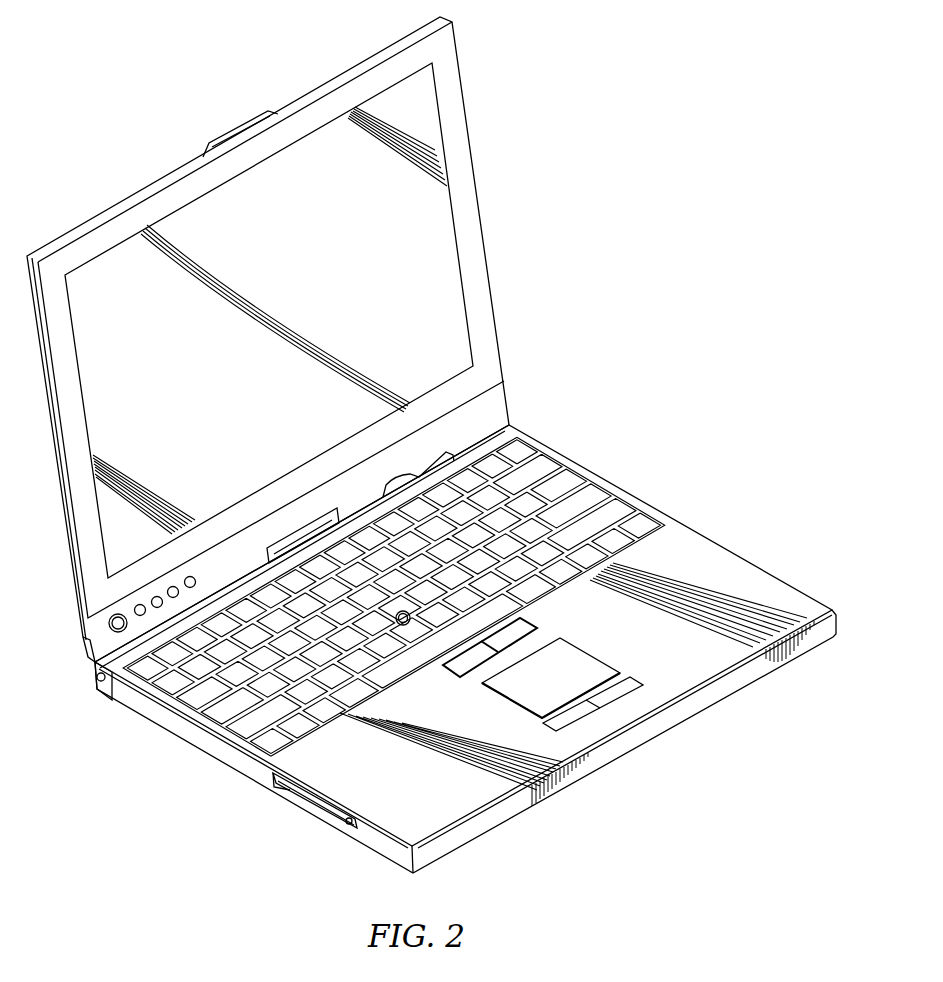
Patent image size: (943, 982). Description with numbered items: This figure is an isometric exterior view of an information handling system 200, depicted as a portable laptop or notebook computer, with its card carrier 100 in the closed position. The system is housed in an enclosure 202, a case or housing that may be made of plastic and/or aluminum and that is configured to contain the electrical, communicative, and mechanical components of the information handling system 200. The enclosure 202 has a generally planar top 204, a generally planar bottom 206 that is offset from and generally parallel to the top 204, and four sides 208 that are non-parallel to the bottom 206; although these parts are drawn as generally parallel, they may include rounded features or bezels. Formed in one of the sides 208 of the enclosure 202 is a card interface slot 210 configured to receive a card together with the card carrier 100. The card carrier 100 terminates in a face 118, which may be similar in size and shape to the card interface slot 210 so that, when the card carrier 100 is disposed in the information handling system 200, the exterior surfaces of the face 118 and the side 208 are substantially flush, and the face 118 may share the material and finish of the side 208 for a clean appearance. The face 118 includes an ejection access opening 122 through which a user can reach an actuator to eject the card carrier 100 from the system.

The information handling system 200 is at (431, 454).
The enclosure 202 is at (600, 474).
The top 204 is at (695, 542).
The bottom 206 is at (208, 760).
The sides 208 is at (177, 725).
The card interface slot 210 is at (282, 782).
The face 118 is at (298, 793).
The card carrier 100 is at (301, 820).
The ejection access opening 122 is at (348, 826).